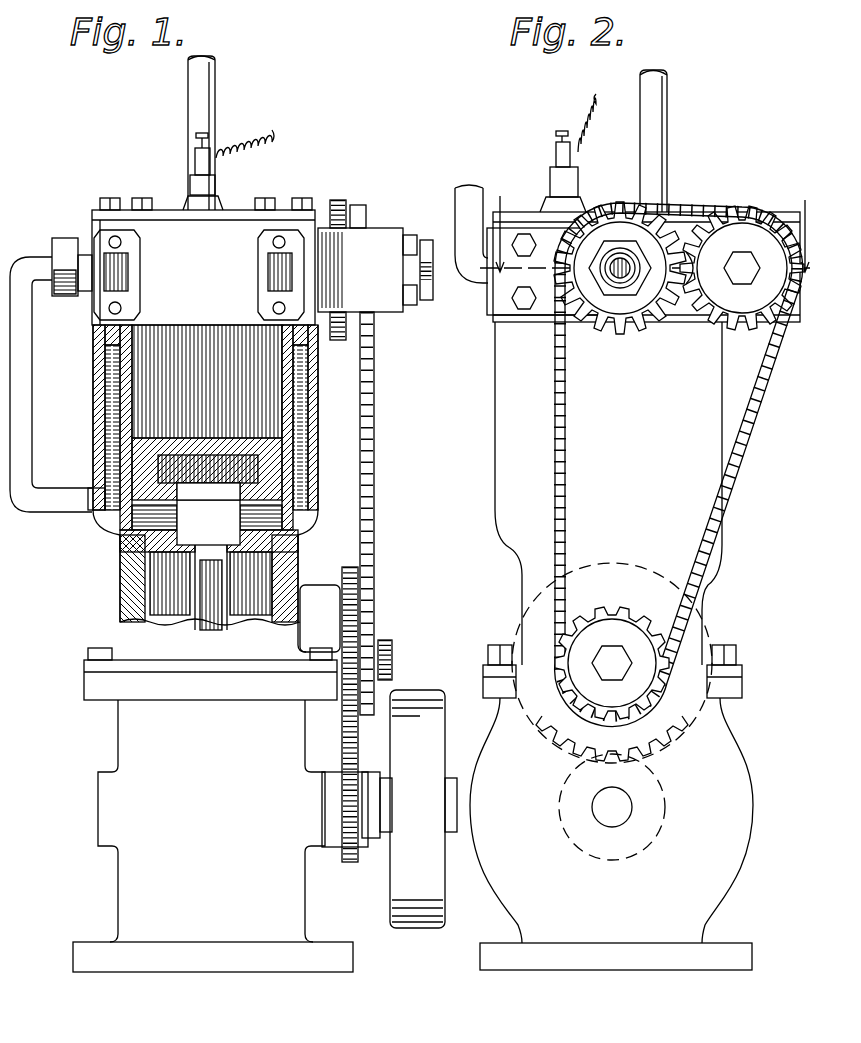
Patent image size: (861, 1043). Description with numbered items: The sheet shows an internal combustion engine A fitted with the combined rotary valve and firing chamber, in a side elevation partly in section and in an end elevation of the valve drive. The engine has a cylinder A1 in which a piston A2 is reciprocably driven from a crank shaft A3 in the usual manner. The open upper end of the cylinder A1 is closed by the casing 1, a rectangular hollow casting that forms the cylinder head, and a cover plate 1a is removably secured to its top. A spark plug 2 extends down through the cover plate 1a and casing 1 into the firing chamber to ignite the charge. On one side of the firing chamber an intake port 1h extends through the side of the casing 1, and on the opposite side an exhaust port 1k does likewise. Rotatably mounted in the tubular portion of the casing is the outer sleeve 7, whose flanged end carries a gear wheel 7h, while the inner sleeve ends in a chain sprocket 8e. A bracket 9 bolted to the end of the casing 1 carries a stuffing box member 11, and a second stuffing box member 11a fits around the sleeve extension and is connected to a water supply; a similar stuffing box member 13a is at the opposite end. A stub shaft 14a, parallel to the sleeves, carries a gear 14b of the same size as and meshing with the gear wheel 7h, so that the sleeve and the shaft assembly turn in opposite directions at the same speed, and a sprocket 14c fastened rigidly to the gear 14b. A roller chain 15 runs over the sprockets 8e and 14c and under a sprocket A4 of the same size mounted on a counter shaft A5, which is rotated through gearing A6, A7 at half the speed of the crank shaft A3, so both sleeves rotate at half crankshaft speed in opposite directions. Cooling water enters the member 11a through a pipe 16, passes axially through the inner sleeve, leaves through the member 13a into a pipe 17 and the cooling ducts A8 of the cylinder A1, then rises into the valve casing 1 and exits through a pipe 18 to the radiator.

In FIG. 1, the casing 1 is at (265, 235).
In FIG. 1, the cover plate 1a is at (240, 210).
In FIG. 2, the cover plate 1a is at (528, 212).
In FIG. 1, the intake port 1h is at (105, 260).
In FIG. 1, the exhaust port 1k is at (278, 278).
In FIG. 1, the spark plug 2 is at (195, 160).
In FIG. 2, the spark plug 2 is at (581, 163).
In FIG. 2, the sleeve 7 is at (648, 224).
In FIG. 2, the gear wheel 7h is at (565, 270).
In FIG. 2, the chain sprocket 8e is at (650, 322).
In FIG. 1, the bracket 9 is at (388, 306).
In FIG. 2, the bracket 9 is at (500, 290).
In FIG. 2, the stuffing box member 11 is at (618, 296).
In FIG. 1, the stuffing box member 11a is at (430, 240).
In FIG. 2, the stuffing box member 11a is at (626, 300).
In FIG. 1, the stuffing box member 13a is at (56, 255).
In FIG. 2, the stub shaft 14a is at (742, 280).
In FIG. 2, the gear 14b is at (742, 210).
In FIG. 2, the sprocket 14c is at (760, 232).
In FIG. 1, the roller chain 15 is at (375, 494).
In FIG. 2, the roller chain 15 is at (560, 420).
In FIG. 2, the pipe 16 is at (466, 186).
In FIG. 1, the pipe 17 is at (30, 348).
In FIG. 1, the pipe 18 is at (188, 100).
In FIG. 2, the pipe 18 is at (668, 150).
In FIG. 1, the internal combustion engine A is at (118, 758).
In FIG. 2, the internal combustion engine A is at (752, 812).
In FIG. 1, the cylinder A1 is at (150, 378).
In FIG. 2, the cylinder A1 is at (495, 405).
In FIG. 1, the piston A2 is at (140, 448).
In FIG. 1, the crank shaft A3 is at (372, 822).
In FIG. 2, the crank shaft A3 is at (624, 816).
In FIG. 1, the sprocket A4 is at (395, 700).
In FIG. 2, the sprocket A4 is at (616, 626).
In FIG. 1, the counter shaft A5 is at (388, 658).
In FIG. 2, the counter shaft A5 is at (612, 668).
In FIG. 1, the gearing A6 is at (342, 600).
In FIG. 2, the gearing A6 is at (680, 730).
In FIG. 1, the gearing A7 is at (348, 782).
In FIG. 2, the gearing A7 is at (665, 805).
In FIG. 1, the cooling ducts A8 is at (112, 415).